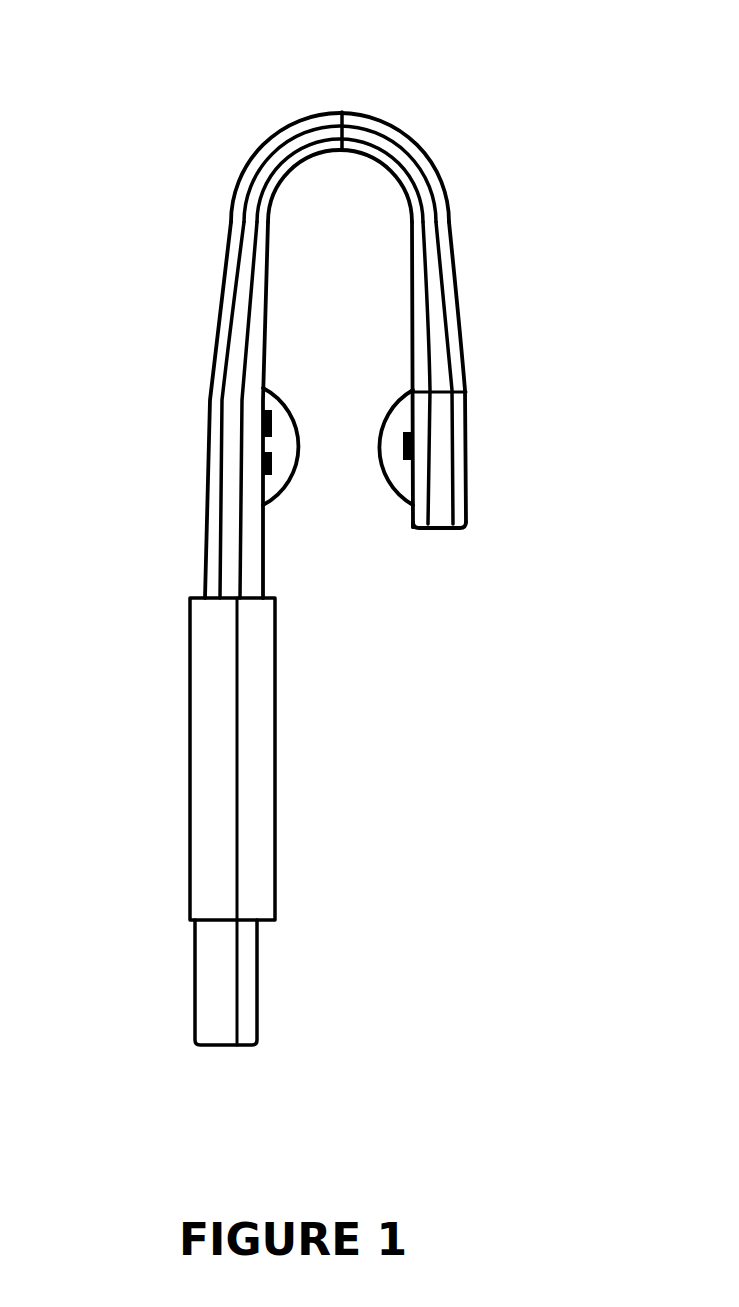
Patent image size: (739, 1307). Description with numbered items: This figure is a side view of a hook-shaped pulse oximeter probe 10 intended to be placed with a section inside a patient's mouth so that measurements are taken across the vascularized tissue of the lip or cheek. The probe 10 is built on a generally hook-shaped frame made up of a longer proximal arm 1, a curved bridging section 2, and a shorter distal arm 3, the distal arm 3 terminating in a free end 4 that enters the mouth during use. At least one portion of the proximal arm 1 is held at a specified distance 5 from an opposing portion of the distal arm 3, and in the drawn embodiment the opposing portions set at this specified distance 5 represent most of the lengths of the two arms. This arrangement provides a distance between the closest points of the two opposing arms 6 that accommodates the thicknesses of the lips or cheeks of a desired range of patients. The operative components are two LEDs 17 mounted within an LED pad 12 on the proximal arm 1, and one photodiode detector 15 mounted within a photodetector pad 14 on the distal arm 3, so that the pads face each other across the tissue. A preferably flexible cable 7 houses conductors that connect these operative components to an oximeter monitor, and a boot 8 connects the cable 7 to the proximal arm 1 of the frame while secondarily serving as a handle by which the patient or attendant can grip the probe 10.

The proximal arm 1 is at (207, 383).
The curved bridging section 2 is at (408, 97).
The distal arm 3 is at (466, 328).
The free end 4 is at (443, 550).
The specified distance 5 is at (412, 380).
The distance between the closest points of the two opposing arms 6 is at (378, 447).
The cable 7 is at (262, 1005).
The boot 8 is at (275, 789).
The pulse oximeter probe 10 is at (520, 258).
The LED pad 12 is at (276, 506).
The photodetector pad 14 is at (391, 490).
The photodiode detector 15 is at (408, 446).
The LEDs 17 is at (266, 424).